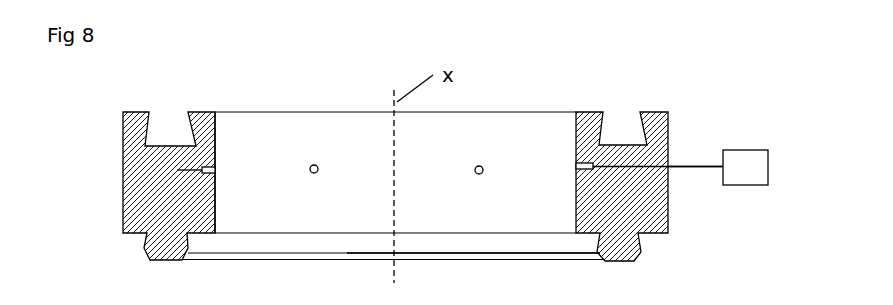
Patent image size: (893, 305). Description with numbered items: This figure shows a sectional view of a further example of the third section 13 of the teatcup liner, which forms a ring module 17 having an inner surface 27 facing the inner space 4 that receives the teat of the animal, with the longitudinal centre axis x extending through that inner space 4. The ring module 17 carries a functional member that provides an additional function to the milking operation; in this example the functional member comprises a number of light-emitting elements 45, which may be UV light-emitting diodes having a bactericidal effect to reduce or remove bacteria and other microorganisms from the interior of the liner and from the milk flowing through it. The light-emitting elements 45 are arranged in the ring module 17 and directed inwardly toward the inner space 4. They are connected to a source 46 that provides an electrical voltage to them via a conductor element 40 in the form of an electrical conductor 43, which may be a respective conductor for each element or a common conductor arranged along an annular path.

The inner space 4 is at (373, 225).
The third section 13 is at (130, 157).
The ring module 17 is at (130, 203).
The inner surface 27 is at (217, 203).
The conductor element 40 is at (703, 167).
The electrical conductor 43 is at (685, 168).
The light-emitting element 45 is at (215, 168).
The source 46 is at (735, 158).